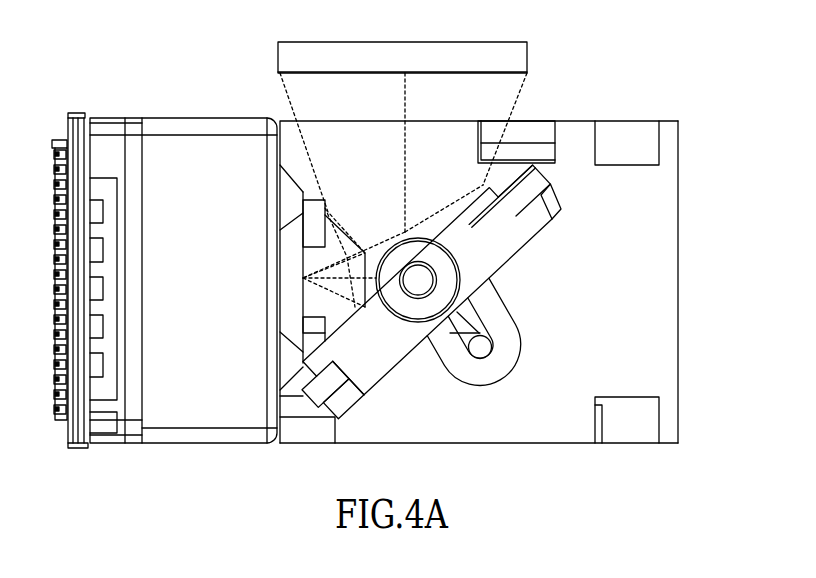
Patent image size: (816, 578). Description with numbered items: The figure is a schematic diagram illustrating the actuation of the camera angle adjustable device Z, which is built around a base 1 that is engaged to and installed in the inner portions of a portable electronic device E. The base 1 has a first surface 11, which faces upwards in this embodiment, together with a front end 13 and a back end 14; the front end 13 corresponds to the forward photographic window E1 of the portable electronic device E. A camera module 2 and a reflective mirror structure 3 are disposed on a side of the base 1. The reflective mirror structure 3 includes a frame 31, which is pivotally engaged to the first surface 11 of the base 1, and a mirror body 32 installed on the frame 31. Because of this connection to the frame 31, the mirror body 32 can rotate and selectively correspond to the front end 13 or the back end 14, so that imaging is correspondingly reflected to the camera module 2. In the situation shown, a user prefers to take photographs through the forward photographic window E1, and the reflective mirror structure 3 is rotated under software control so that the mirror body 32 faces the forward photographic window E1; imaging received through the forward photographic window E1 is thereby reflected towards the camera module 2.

The base 1 is at (685, 199).
The first surface 11 is at (666, 283).
The front end 13 is at (638, 121).
The back end 14 is at (638, 443).
The camera module 2 is at (183, 107).
The reflective mirror structure 3 is at (454, 292).
The frame 31 is at (390, 347).
The mirror body 32 is at (467, 222).
The portable electronic device E is at (455, 57).
The forward photographic window E1 is at (528, 60).
The camera angle adjustable device Z is at (682, 33).